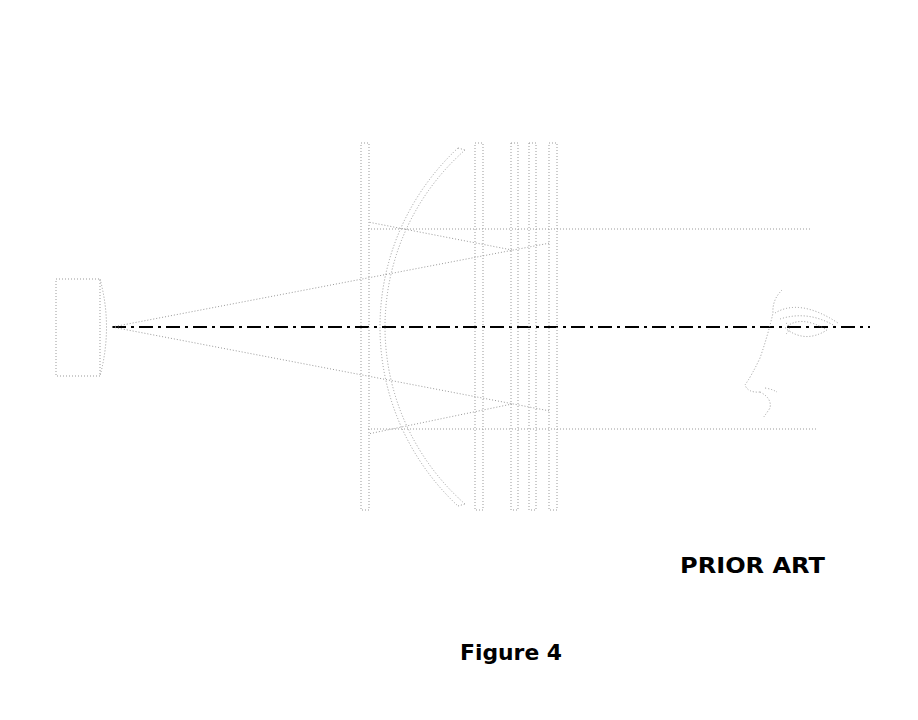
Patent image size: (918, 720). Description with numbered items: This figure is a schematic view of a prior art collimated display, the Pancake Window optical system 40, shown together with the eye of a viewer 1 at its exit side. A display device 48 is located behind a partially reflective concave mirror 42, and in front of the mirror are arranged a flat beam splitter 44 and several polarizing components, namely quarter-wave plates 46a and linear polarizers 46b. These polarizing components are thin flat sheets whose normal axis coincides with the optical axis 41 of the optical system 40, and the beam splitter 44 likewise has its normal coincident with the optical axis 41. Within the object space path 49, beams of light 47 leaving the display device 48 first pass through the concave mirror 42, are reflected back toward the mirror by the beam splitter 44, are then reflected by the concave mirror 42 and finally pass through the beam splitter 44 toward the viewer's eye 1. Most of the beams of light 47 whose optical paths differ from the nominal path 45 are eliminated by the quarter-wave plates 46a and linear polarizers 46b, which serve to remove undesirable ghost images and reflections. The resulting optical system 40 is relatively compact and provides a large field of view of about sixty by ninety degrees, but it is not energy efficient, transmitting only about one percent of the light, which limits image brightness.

The eye of viewer 1 is at (820, 306).
The optical system 40 is at (677, 78).
The optical axis 41 is at (617, 327).
The concave mirror 42 is at (447, 157).
The beam splitter 44 is at (513, 143).
The nominal path 45 is at (642, 229).
The quarter-wave plates 46a is at (478, 512).
The linear polarizers 46b is at (365, 143).
The beams of light 47 is at (286, 361).
The display device 48 is at (80, 279).
The object space path 49 is at (362, 362).